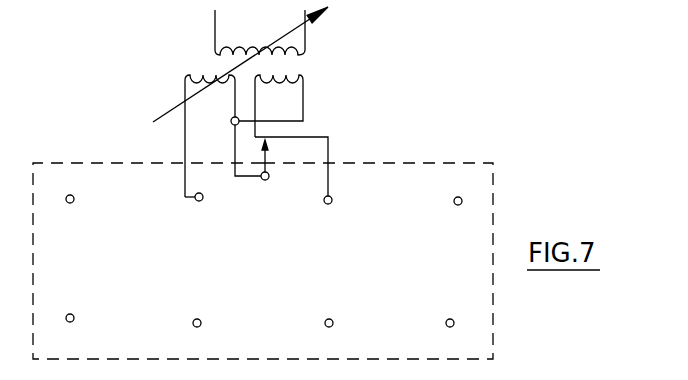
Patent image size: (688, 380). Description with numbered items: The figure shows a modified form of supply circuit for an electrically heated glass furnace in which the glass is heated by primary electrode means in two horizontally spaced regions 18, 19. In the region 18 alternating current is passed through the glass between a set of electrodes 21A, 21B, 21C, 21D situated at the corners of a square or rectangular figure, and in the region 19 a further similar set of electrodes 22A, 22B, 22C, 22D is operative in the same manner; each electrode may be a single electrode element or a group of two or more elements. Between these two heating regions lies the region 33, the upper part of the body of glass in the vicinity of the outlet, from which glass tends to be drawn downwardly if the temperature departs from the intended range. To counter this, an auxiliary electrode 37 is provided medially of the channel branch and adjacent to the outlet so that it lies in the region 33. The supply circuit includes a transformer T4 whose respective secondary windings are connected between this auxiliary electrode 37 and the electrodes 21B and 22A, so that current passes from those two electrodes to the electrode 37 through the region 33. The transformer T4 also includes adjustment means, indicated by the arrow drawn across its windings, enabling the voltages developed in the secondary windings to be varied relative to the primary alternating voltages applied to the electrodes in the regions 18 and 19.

The transformer T4 is at (231, 102).
The region 18 is at (135, 271).
The region 19 is at (427, 270).
The region 33 is at (308, 193).
The auxiliary electrode 37 is at (265, 180).
The electrode 21A is at (71, 186).
The electrode 21B is at (206, 212).
The electrode 21C is at (206, 340).
The electrode 21D is at (75, 337).
The electrode 22A is at (350, 214).
The electrode 22B is at (451, 187).
The electrode 22C is at (456, 340).
The electrode 22D is at (337, 340).